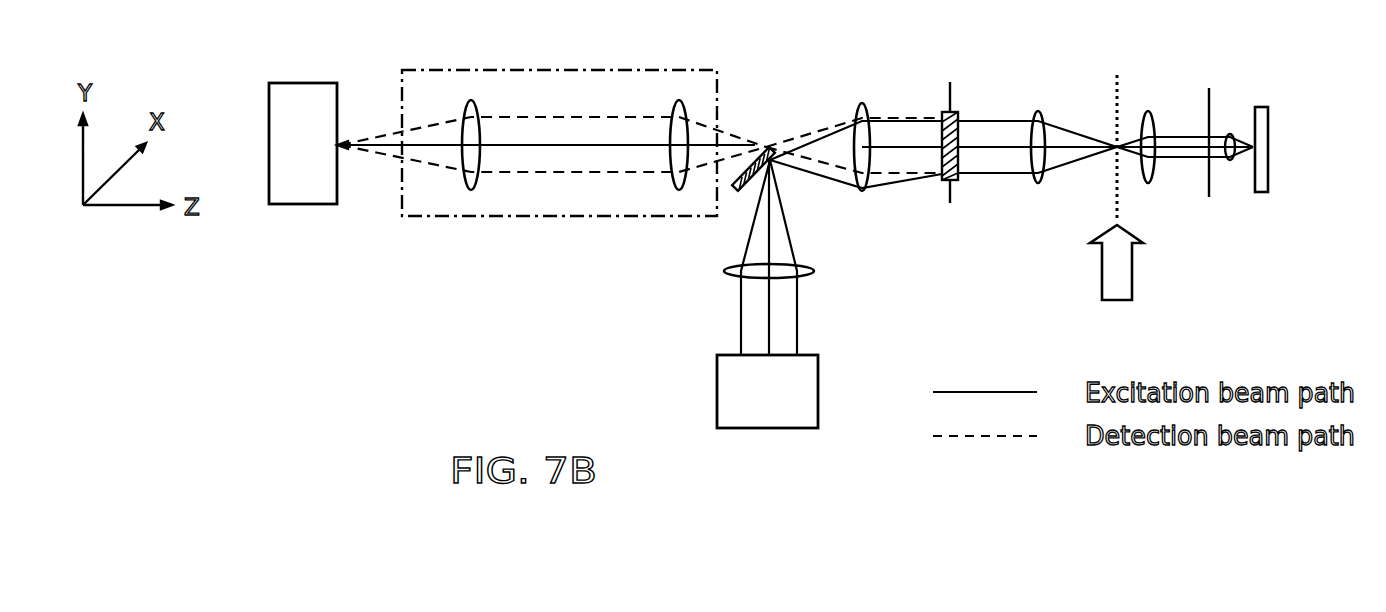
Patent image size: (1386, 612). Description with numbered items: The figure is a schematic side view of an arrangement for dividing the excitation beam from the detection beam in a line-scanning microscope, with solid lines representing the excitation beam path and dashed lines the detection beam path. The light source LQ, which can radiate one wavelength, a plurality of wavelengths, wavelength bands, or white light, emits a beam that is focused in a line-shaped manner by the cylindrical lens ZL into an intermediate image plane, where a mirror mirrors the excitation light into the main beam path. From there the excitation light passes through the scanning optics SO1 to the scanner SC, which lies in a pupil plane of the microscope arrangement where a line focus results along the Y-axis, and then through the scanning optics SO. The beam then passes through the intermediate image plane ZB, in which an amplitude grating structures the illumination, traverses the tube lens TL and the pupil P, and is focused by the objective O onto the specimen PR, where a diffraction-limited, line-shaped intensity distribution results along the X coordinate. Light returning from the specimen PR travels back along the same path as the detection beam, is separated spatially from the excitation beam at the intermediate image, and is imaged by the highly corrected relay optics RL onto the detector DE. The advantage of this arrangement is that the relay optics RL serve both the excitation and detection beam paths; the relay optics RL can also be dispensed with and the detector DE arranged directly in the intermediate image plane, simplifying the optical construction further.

The detector DE is at (281, 132).
The relay optics RL is at (559, 124).
The light source LQ is at (792, 392).
The cylindrical lens ZL is at (789, 273).
The scanning optics SO1 is at (862, 129).
The scanner SC is at (950, 115).
The pupil P is at (1082, 137).
The scanning optics SO is at (1038, 134).
The intermediate image plane ZB is at (1117, 133).
The tube lens TL is at (1159, 136).
The objective O is at (1230, 129).
The specimen PR is at (1281, 159).